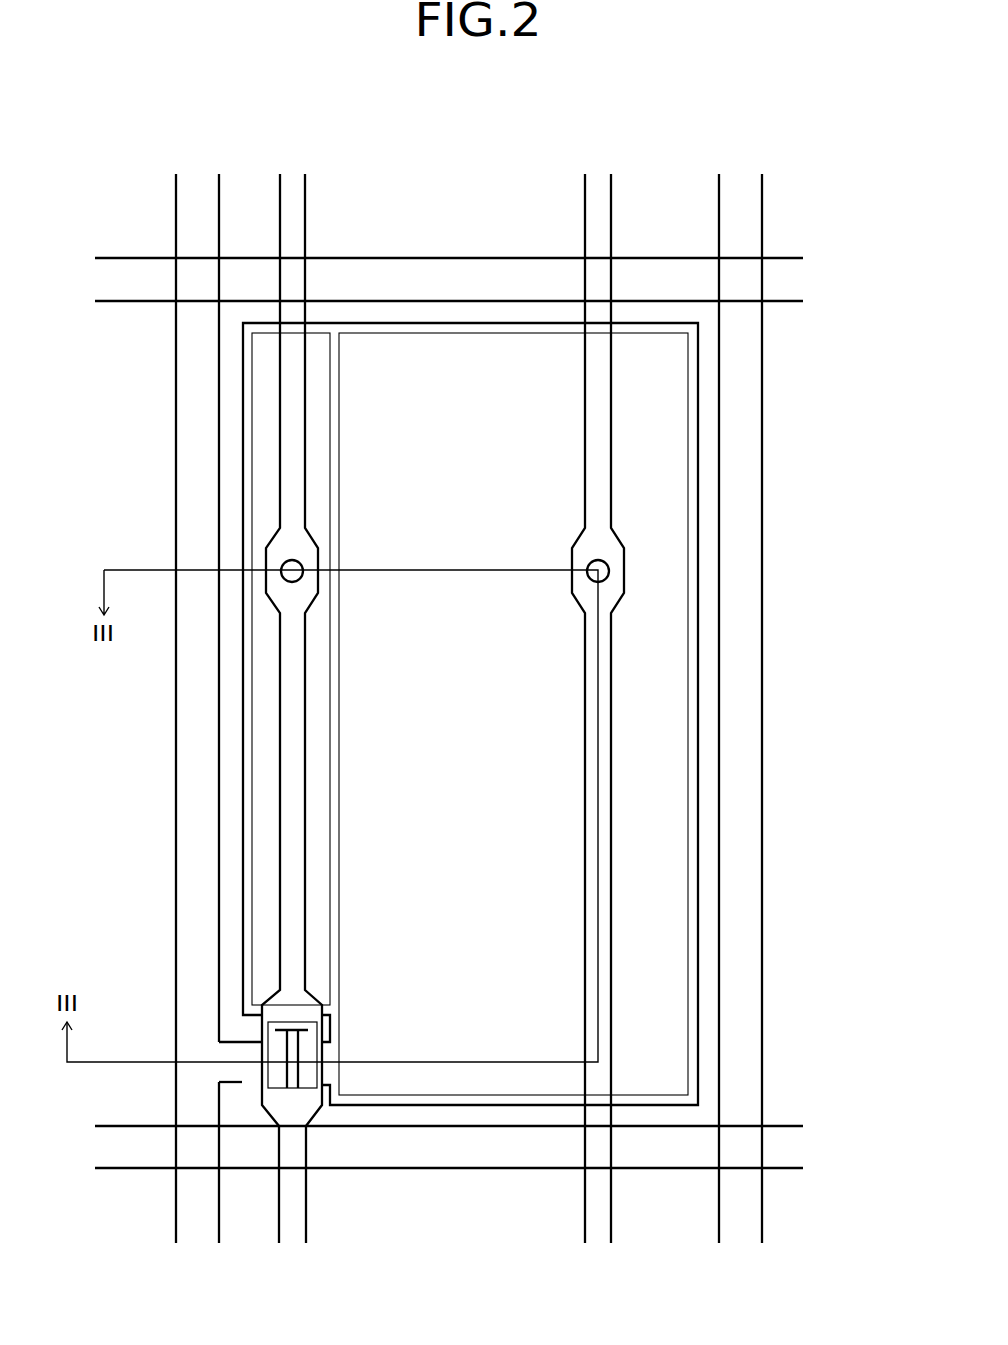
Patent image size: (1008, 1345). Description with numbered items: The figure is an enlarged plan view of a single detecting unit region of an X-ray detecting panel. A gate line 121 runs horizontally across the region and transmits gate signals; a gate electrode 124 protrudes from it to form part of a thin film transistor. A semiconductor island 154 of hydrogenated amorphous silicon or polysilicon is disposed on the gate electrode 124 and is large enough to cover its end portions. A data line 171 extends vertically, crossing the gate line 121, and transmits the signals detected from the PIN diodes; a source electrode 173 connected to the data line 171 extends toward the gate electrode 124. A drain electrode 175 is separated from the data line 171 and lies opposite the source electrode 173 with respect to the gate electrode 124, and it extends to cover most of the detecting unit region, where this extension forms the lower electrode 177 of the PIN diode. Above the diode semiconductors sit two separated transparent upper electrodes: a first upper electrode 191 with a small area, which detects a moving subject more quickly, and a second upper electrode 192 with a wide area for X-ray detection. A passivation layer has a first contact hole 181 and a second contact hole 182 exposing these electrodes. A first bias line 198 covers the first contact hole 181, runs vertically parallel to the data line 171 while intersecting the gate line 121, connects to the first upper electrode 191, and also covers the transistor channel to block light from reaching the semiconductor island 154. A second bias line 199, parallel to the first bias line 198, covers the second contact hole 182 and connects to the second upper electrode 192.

The gate line 121 is at (788, 1148).
The gate electrode 124 is at (283, 1035).
The semiconductor island 154 is at (242, 1073).
The data line 171 is at (197, 193).
The source electrode 173 is at (287, 1104).
The drain electrode 175 is at (302, 1104).
The lower electrode 177 is at (462, 1108).
The first contact hole 181 is at (300, 563).
The second contact hole 182 is at (590, 564).
The first upper electrode 191 is at (250, 808).
The second upper electrode 192 is at (690, 808).
The first bias line 198 is at (306, 200).
The second bias line 199 is at (611, 200).